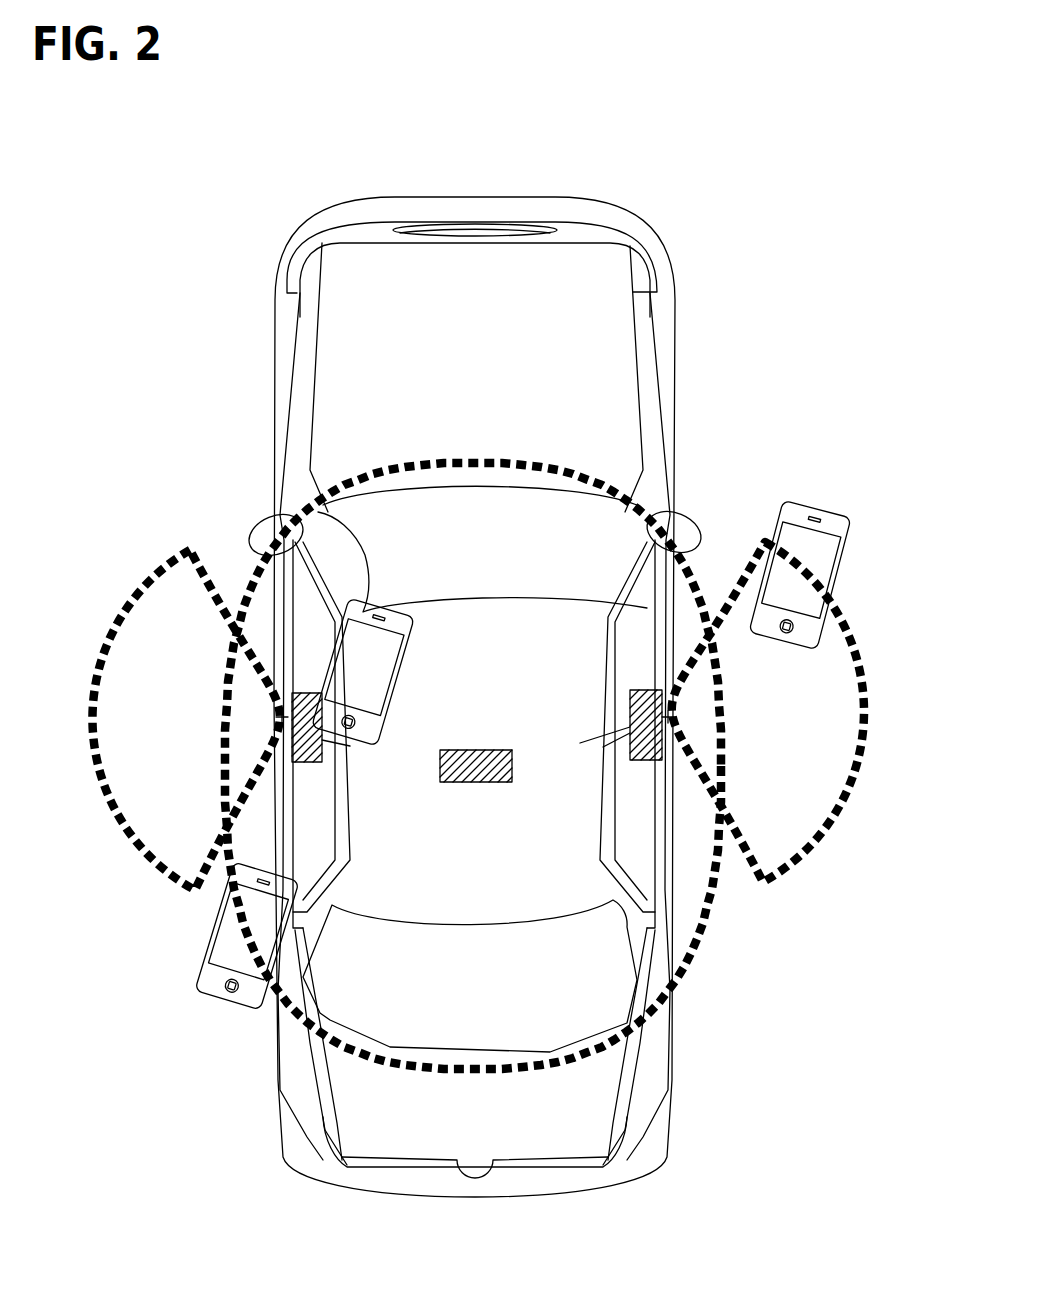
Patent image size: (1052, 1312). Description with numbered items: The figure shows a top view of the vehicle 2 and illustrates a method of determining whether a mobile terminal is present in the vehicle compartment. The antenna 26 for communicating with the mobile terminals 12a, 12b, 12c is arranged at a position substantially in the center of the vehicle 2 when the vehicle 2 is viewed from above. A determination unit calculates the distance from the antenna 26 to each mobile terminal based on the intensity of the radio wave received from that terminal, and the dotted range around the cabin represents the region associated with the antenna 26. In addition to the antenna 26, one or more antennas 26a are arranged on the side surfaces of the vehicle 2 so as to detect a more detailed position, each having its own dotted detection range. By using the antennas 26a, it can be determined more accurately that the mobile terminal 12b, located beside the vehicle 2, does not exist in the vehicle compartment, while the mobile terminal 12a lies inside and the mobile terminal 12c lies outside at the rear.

The vehicle 2 is at (625, 232).
The mobile terminal 12a is at (330, 517).
The mobile terminal 12b is at (834, 512).
The mobile terminal 12c is at (213, 947).
The antenna 26 is at (475, 782).
The antenna 26a is at (305, 712).